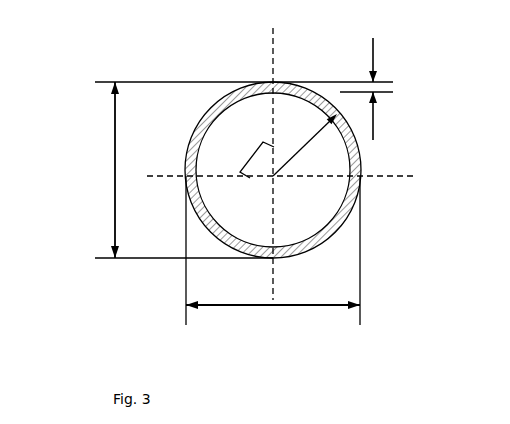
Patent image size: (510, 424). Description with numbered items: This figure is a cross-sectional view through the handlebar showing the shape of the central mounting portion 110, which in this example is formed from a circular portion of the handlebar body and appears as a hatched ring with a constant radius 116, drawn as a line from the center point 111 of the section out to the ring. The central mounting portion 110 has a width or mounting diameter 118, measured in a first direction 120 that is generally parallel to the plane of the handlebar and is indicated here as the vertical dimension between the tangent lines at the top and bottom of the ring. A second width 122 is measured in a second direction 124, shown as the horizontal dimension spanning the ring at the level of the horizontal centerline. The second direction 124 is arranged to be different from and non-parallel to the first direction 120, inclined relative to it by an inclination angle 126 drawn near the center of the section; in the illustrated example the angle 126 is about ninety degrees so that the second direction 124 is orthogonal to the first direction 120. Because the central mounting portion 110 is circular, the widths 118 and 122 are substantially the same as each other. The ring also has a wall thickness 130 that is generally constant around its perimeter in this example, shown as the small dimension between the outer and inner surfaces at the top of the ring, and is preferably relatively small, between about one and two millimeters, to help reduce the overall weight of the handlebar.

The central mounting portion 110 is at (177, 135).
The central axis 111 is at (273, 176).
The radius 116 is at (293, 157).
The mounting diameter 118 is at (114, 162).
The first direction 120 is at (273, 81).
The width 122 is at (276, 306).
The second direction 124 is at (376, 181).
The inclination angle 126 is at (254, 154).
The wall thickness 130 is at (374, 45).